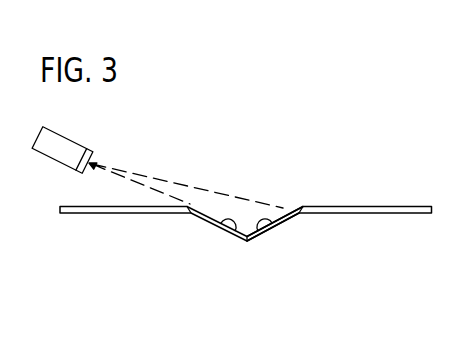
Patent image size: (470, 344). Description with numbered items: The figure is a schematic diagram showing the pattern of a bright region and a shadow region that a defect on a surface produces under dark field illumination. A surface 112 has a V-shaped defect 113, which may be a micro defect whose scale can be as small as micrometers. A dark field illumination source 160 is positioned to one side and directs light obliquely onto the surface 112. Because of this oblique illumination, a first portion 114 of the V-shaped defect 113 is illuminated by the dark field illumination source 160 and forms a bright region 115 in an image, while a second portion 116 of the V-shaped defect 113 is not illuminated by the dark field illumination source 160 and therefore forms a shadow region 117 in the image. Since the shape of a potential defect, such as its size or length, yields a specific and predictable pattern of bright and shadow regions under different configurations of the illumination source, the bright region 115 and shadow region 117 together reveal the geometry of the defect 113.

The surface 112 is at (362, 206).
The V-shaped defect 113 is at (313, 225).
The first portion 114 is at (262, 233).
The bright region 115 is at (275, 203).
The second portion 116 is at (235, 238).
The shadow region 117 is at (212, 178).
The dark field illumination source 160 is at (68, 137).